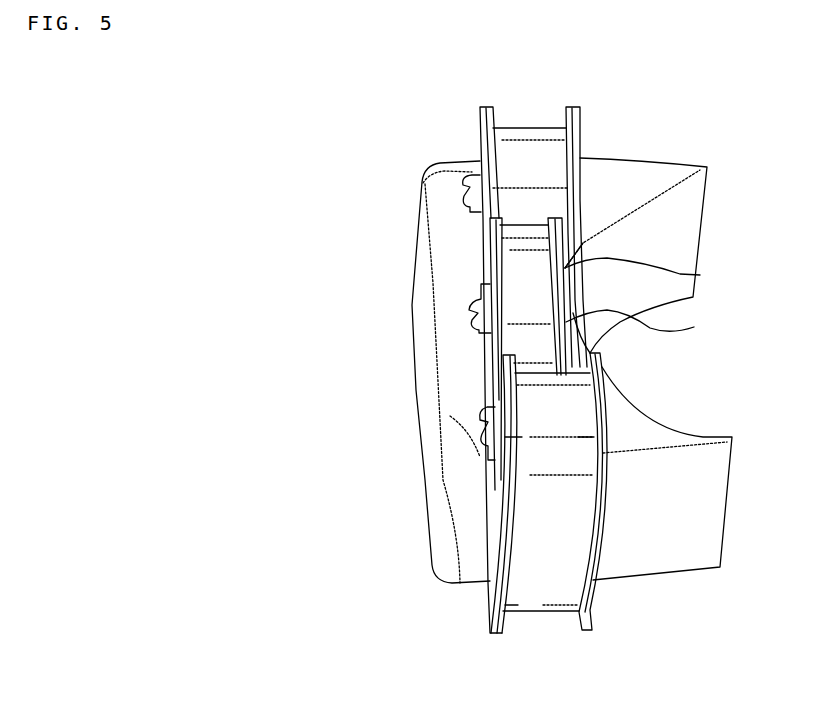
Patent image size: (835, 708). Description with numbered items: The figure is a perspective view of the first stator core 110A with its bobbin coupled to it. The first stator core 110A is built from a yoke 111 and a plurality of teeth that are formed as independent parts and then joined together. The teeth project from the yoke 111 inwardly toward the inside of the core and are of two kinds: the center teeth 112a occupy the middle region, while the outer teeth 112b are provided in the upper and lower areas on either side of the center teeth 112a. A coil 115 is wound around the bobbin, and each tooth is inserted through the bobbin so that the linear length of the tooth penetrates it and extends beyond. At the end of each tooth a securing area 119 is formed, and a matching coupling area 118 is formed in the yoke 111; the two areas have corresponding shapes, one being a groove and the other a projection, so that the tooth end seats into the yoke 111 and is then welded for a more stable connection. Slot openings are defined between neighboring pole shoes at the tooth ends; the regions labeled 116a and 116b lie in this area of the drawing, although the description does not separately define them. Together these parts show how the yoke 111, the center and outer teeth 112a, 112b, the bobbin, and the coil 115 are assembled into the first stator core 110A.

The first stator core 110A is at (620, 133).
The yoke 111 is at (450, 416).
The center teeth 112a is at (700, 275).
The outer teeth 112b is at (658, 170).
The coil 115 is at (529, 596).
The first wing portion 116a is at (694, 327).
The second wing portion 116b is at (587, 631).
The coupling area 118 is at (419, 377).
The securing area 119 is at (423, 181).